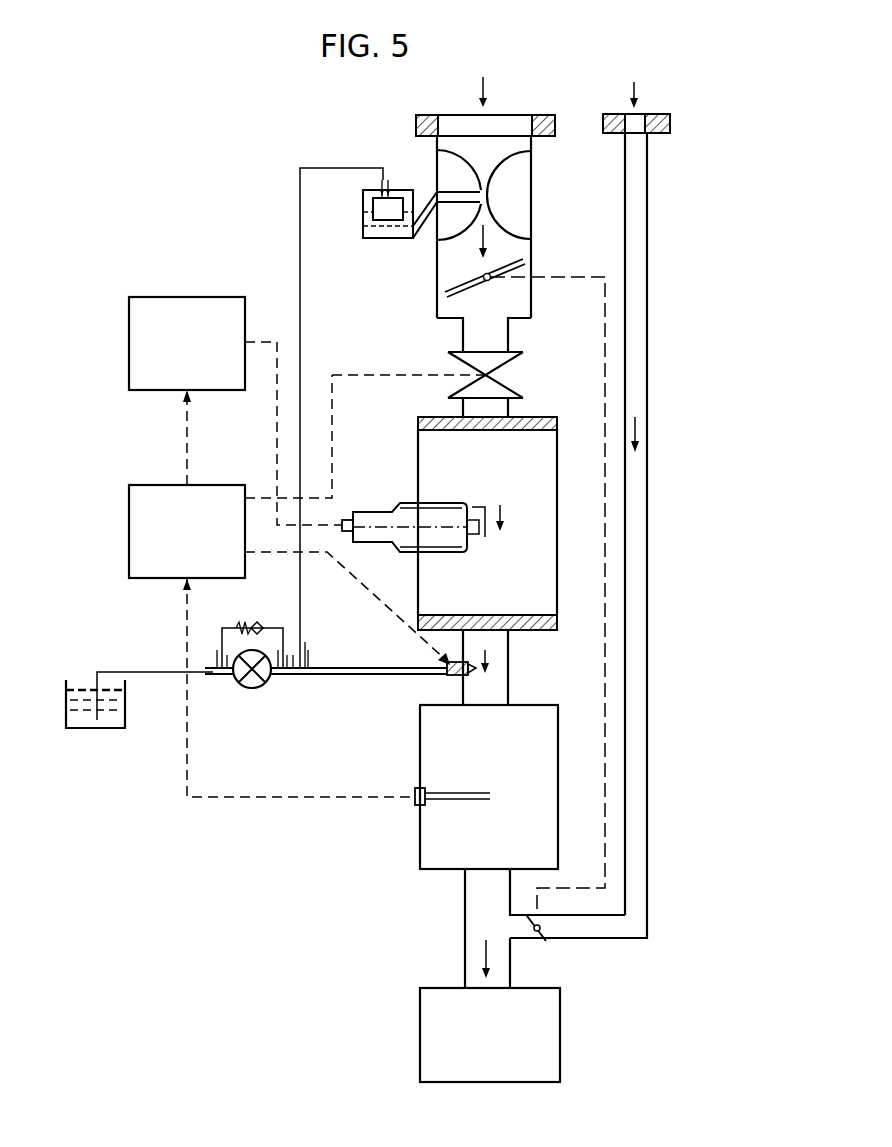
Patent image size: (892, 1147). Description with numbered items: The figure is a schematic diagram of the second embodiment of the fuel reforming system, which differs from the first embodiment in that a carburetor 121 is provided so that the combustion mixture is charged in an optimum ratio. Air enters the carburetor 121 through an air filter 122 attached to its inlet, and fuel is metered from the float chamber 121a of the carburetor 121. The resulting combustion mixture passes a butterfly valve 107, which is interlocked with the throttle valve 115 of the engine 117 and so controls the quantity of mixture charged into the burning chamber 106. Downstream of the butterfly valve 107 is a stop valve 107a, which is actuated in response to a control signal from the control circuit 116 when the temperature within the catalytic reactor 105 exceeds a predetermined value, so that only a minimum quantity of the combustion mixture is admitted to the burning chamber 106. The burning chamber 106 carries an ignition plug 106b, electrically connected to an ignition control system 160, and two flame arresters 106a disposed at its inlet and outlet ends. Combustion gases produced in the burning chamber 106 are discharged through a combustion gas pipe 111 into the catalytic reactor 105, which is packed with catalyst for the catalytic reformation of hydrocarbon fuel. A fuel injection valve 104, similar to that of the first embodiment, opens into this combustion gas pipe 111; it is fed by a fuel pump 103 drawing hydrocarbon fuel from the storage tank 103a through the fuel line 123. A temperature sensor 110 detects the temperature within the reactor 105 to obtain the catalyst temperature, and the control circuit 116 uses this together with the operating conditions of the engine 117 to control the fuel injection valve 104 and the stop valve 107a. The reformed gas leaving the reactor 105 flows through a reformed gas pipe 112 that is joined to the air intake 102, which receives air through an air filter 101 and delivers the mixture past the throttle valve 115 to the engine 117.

The air filter 101 is at (665, 133).
The air intake 102 is at (647, 530).
The fuel pump 103 is at (250, 690).
The hydrocarbon fuel storage tank 103a is at (100, 728).
The fuel injection valve 104 is at (448, 675).
The catalytic reactor 105 is at (558, 855).
The burning chamber 106 is at (545, 505).
The flame arresters 106a is at (543, 425).
The ignition plug 106b is at (373, 522).
The butterfly valve 107 is at (515, 263).
The stop valve 107a is at (490, 375).
The temperature sensor 110 is at (413, 805).
The combustion gas pipe 111 is at (508, 683).
The reformed gas pipe 112 is at (465, 910).
The throttle valve 115 is at (546, 941).
The control circuit 116 is at (129, 530).
The engine 117 is at (420, 1018).
The carburetor 121 is at (531, 225).
The float chamber 121a is at (383, 238).
The air filter 122 is at (538, 136).
The fuel line 123 is at (323, 675).
The ignition control system 160 is at (187, 297).